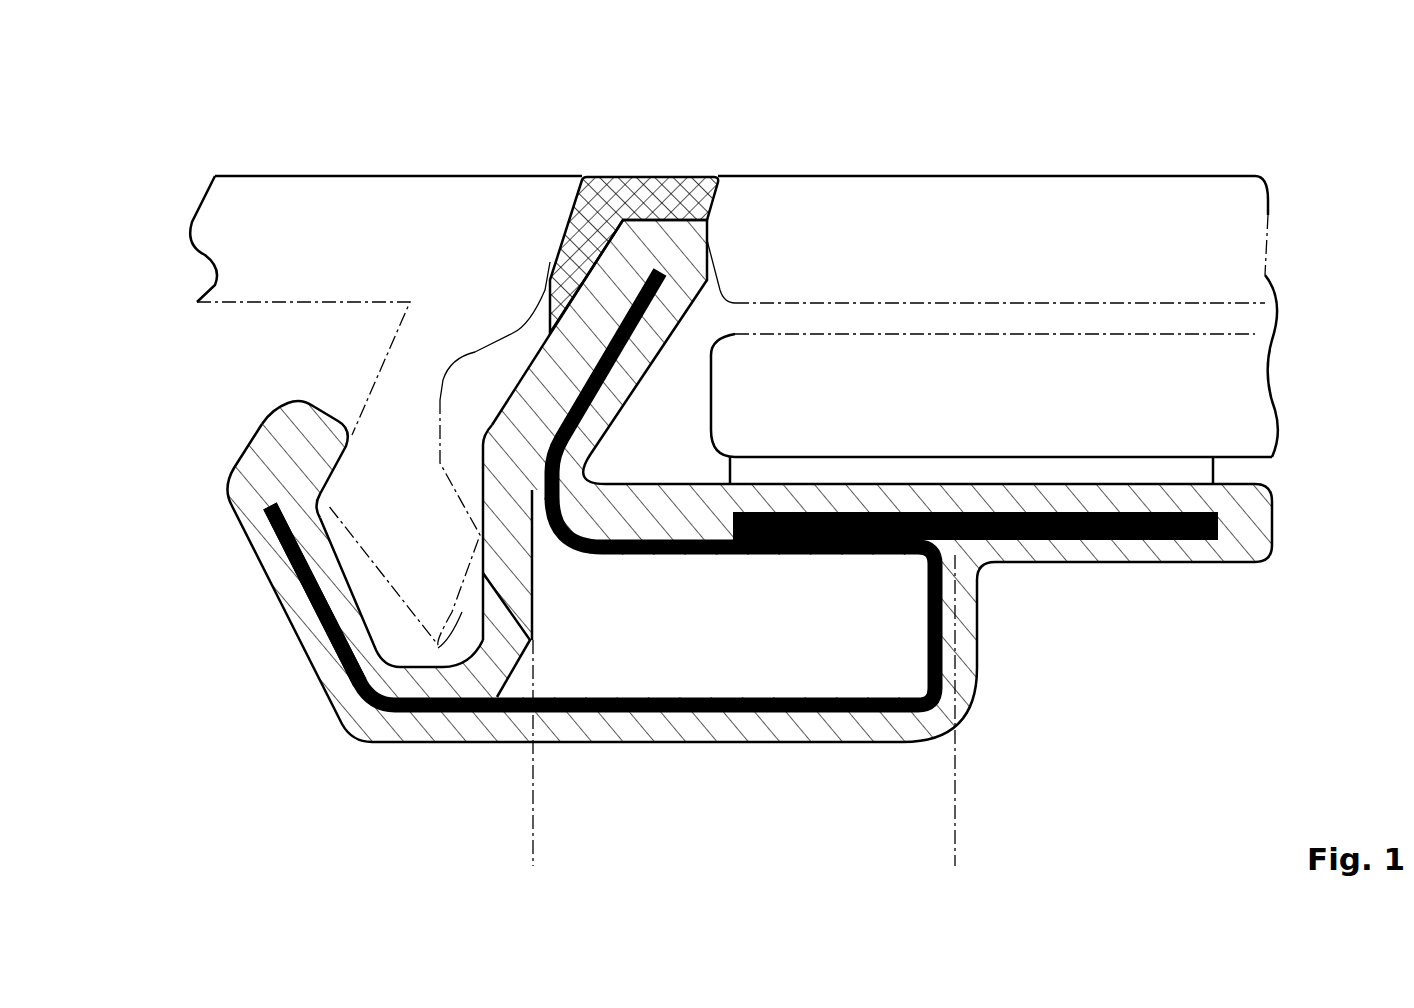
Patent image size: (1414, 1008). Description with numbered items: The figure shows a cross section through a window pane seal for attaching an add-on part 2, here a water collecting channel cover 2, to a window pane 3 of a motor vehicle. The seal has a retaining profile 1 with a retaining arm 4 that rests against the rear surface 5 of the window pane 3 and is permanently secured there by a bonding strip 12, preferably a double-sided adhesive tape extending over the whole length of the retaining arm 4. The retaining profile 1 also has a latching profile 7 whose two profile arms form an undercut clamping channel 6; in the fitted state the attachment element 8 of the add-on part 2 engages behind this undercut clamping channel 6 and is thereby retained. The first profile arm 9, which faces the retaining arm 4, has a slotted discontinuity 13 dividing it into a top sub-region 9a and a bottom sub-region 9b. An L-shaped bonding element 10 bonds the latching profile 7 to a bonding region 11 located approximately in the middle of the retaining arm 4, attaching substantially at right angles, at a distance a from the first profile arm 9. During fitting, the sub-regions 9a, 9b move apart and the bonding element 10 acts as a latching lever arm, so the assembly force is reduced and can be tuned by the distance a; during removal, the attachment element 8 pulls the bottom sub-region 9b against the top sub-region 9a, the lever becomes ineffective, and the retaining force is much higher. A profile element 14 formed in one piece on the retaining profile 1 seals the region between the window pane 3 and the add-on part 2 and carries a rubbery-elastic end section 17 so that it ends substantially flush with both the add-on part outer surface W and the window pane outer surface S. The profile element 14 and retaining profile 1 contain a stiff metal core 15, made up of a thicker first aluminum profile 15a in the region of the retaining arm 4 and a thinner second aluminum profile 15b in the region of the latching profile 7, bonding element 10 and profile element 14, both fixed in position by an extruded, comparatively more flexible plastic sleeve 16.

The retaining profile 1 is at (293, 797).
The add-on part 2 is at (295, 242).
The window pane 3 is at (820, 413).
The retaining arm 4 is at (1137, 592).
The surface 5 is at (1262, 465).
The undercut clamping channel 6 is at (388, 630).
The latching profile 7 is at (225, 600).
The attachment element 8 is at (392, 506).
The first profile arm 9 is at (510, 507).
The top sub-region 9a is at (512, 550).
The bottom sub-region 9b is at (420, 742).
The bonding element 10 is at (830, 768).
The bonding region 11 is at (957, 553).
The bonding strip 12 is at (1083, 467).
The discontinuity 13 is at (498, 612).
The profile element 14 is at (632, 278).
The core 15 is at (946, 500).
The first aluminum profile 15a is at (1233, 527).
The second aluminum profile 15b is at (275, 520).
The plastic sleeve 16 is at (300, 425).
The end section 17 is at (644, 195).
The add-on part outer surface W is at (442, 172).
The window pane outer surface S is at (1154, 170).
The distance a is at (533, 853).